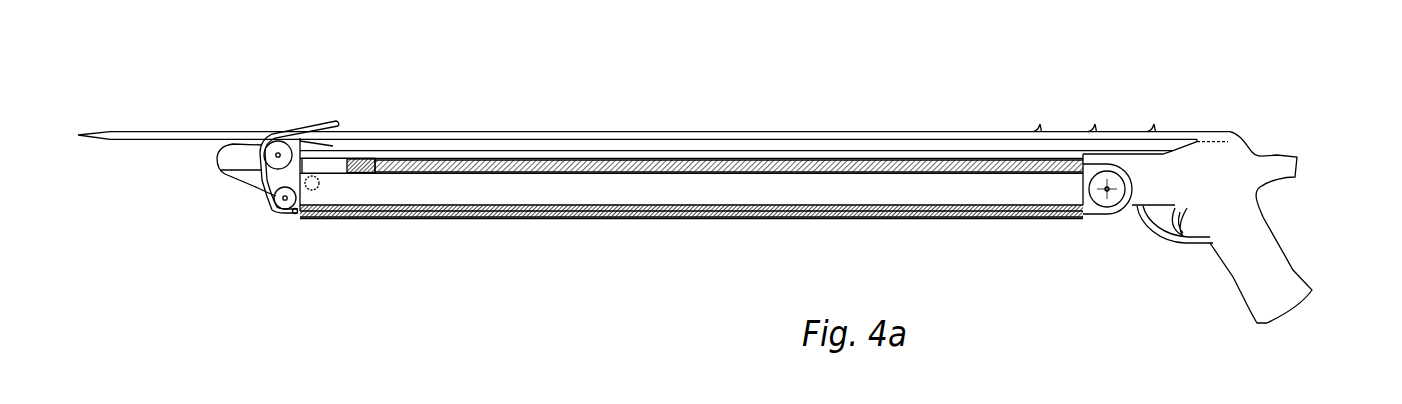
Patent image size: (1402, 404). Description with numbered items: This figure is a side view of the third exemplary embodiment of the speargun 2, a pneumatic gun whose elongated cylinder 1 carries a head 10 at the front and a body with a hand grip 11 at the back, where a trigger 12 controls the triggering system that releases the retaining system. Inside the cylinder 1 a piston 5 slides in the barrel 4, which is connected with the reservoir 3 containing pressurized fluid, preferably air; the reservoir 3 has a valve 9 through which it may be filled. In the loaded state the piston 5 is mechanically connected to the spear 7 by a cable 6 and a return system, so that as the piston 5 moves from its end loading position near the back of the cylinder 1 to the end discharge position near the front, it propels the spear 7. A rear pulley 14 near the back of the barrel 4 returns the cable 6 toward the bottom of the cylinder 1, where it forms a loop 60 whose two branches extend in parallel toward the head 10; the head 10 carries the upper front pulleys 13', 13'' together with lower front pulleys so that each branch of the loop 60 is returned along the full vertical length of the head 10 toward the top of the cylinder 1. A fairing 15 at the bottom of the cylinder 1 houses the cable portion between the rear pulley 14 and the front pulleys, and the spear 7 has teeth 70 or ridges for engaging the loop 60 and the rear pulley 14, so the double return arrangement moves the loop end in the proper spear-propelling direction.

The cylinder 1 is at (710, 157).
The speargun 2 is at (620, 386).
The reservoir 3 is at (1012, 190).
The barrel 4 is at (833, 157).
The piston 5 is at (378, 170).
The cable 6 is at (638, 175).
The spear 7 is at (580, 131).
The valve 9 is at (312, 190).
The head 10 is at (233, 157).
The hand grip 11 is at (1263, 250).
The trigger 12 is at (1180, 220).
The upper front pulley 13' is at (233, 102).
The upper front pulley 13'' is at (263, 246).
The rear pulley 14 is at (1107, 205).
The fairing 15 is at (540, 218).
The loop 60 is at (327, 118).
The teeth 70 is at (1037, 128).